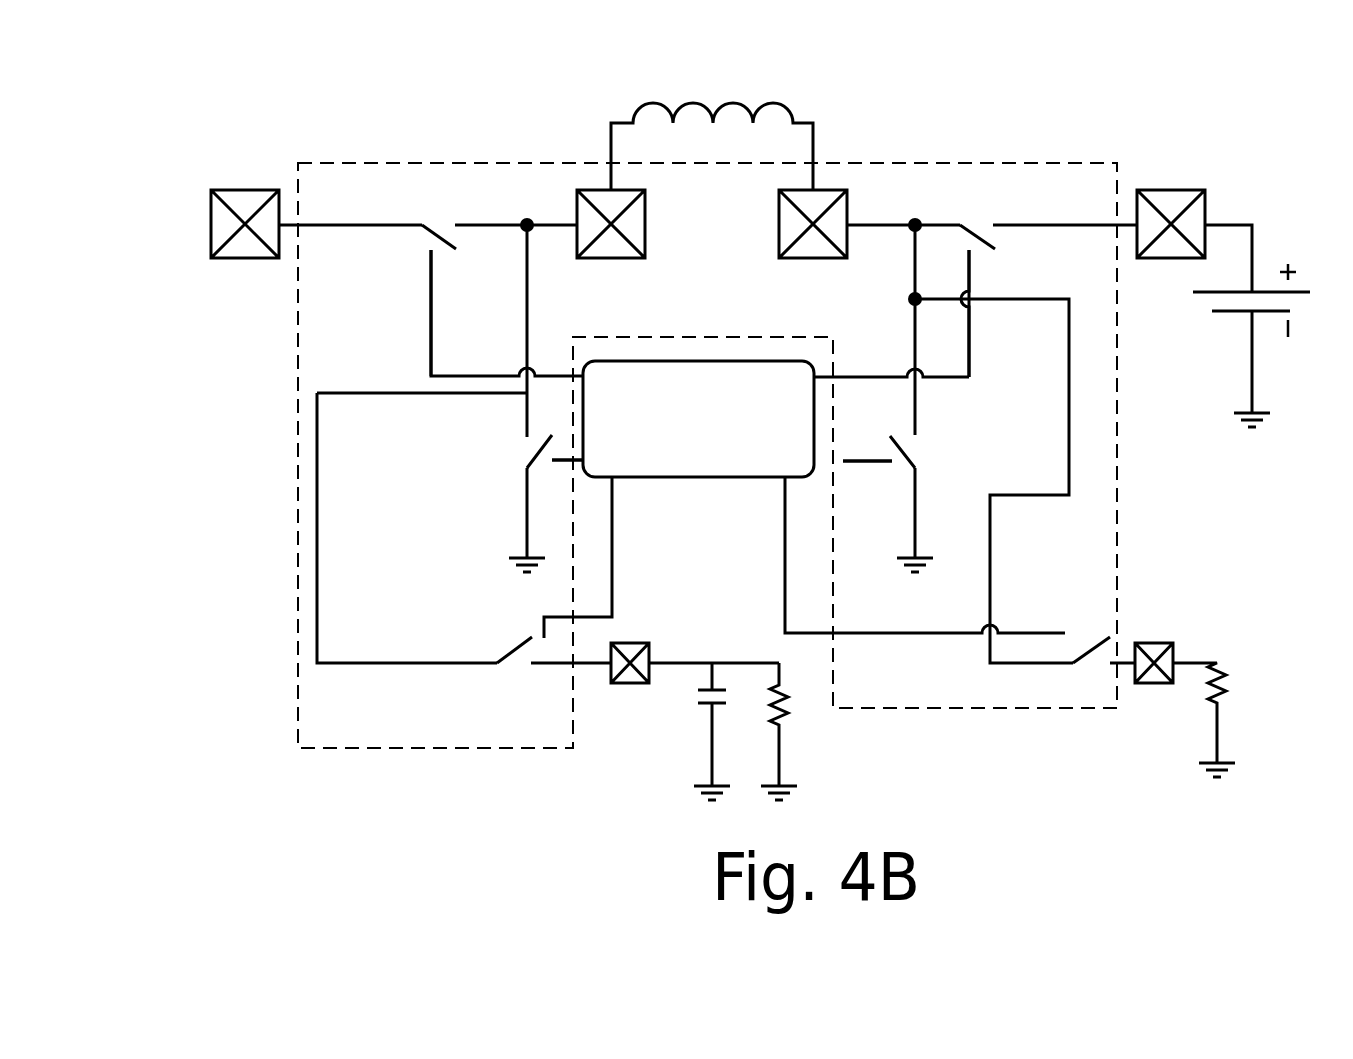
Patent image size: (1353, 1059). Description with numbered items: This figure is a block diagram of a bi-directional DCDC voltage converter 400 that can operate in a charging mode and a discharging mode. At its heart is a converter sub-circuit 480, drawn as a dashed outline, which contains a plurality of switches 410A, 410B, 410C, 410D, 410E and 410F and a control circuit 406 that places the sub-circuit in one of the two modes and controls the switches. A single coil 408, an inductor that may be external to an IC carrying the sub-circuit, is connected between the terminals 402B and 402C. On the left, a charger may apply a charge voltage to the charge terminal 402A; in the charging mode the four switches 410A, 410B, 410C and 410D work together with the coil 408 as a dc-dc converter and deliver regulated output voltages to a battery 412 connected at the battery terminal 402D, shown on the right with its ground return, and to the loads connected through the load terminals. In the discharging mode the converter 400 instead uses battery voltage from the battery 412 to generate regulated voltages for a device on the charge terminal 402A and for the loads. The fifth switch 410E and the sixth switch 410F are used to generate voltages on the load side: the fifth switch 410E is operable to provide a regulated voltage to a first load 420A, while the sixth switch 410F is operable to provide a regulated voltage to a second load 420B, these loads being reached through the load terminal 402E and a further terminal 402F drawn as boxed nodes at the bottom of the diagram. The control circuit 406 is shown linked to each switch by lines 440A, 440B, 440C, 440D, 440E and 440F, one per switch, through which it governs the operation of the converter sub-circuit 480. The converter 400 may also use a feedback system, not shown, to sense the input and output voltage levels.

The voltage converter 400 is at (873, 43).
The charge terminal 402A is at (215, 183).
The terminal 402B is at (581, 185).
The terminal 402C is at (835, 187).
The battery terminal 402D is at (1170, 182).
The load terminal 402E is at (1173, 643).
The node 402F is at (625, 697).
The control circuit 406 is at (680, 442).
The coil 408 is at (712, 98).
The switch 410A is at (437, 220).
The switch 410B is at (520, 448).
The switch 410C is at (983, 222).
The switch 410D is at (910, 448).
The fifth switch 410E is at (1093, 669).
The sixth switch 410F is at (515, 665).
The battery 412 is at (1228, 320).
The first load 420A is at (808, 717).
The second load 420B is at (1238, 692).
The control signal line 440A is at (422, 321).
The control signal line 440B is at (563, 465).
The control signal line 440C is at (969, 377).
The control signal line 440D is at (860, 463).
The control signal line 440E is at (943, 637).
The control signal line 440F is at (612, 558).
The converter sub-circuit 480 is at (987, 163).